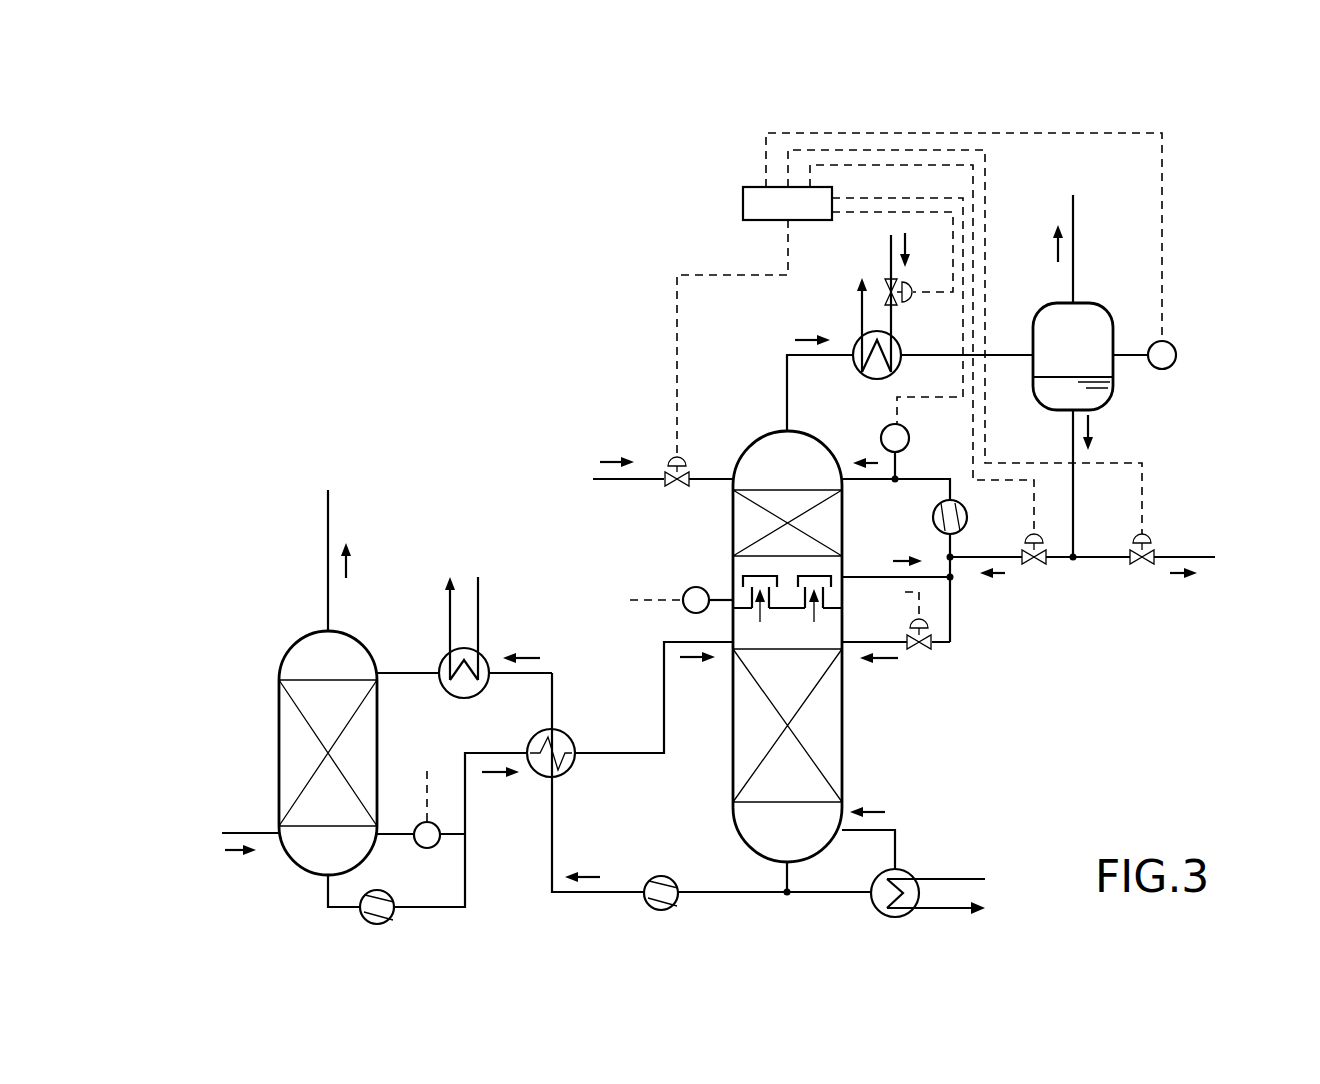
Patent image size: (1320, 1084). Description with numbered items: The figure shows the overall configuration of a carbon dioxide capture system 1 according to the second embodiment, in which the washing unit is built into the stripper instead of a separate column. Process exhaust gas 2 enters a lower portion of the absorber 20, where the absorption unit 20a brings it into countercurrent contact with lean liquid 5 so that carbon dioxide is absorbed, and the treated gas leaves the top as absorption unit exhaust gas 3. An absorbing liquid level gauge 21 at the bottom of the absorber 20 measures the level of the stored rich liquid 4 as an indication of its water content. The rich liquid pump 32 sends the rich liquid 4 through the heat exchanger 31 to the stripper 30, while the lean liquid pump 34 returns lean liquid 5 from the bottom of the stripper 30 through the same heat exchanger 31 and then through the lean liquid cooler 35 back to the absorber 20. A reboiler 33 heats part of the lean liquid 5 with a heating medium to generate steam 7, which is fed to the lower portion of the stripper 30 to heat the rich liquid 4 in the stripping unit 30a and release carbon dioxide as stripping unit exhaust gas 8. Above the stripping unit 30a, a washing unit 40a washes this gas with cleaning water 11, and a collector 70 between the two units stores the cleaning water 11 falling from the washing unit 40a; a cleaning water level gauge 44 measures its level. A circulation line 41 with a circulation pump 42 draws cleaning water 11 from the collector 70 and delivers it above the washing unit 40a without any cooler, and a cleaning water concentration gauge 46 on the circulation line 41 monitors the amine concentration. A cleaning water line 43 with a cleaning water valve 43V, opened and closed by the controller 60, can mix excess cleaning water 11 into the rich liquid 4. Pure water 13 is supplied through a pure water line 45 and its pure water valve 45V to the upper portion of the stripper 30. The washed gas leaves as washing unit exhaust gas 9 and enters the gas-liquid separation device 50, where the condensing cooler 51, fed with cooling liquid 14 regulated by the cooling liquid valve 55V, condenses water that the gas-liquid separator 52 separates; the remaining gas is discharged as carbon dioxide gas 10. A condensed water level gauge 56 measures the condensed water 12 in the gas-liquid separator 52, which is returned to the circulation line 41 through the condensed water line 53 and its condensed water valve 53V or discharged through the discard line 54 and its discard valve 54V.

The carbon dioxide capture system 1 is at (433, 308).
The process exhaust gas 2 is at (240, 856).
The absorption unit exhaust gas 3 is at (346, 565).
The rich liquid 4 is at (492, 778).
The lean liquid 5 is at (527, 655).
The steam 7 is at (878, 806).
The stripping unit exhaust gas 8 is at (767, 620).
The washing unit exhaust gas 9 is at (808, 338).
The carbon dioxide gas 10 is at (1058, 249).
The cleaning water 11 is at (872, 463).
The condensed water 12 is at (1088, 428).
The pure water 13 is at (612, 460).
The cooling liquid 14 is at (906, 244).
The absorber 20 is at (268, 725).
The absorption unit 20a is at (292, 775).
The absorbing liquid level gauge 21 is at (441, 838).
The stripper 30 is at (855, 733).
The stripping unit 30a is at (745, 745).
The heat exchanger 31 is at (566, 735).
The rich liquid pump 32 is at (388, 893).
The reboiler 33 is at (906, 870).
The lean liquid pump 34 is at (660, 876).
The lean liquid cooler 35 is at (481, 697).
The washing unit 40a is at (747, 527).
The circulation line 41 is at (925, 482).
The circulation pump 42 is at (968, 520).
The cleaning water line 43 is at (951, 645).
The cleaning water valve 43V is at (919, 652).
The cleaning water level gauge 44 is at (686, 612).
The pure water line 45 is at (715, 477).
The pure water valve 45V is at (668, 457).
The cleaning water concentration gauge 46 is at (909, 440).
The gas-liquid separation device 50 is at (1058, 412).
The condensing cooler 51 is at (858, 373).
The gas-liquid separator 52 is at (1105, 306).
The condensed water line 53 is at (973, 562).
The condensed water valve 53V is at (1034, 565).
The discard line 54 is at (1098, 555).
The discard valve 54V is at (1142, 565).
The cooling liquid valve 55V is at (886, 285).
The condensed water level gauge 56 is at (1172, 367).
The controller 60 is at (743, 202).
The collector 70 is at (743, 600).